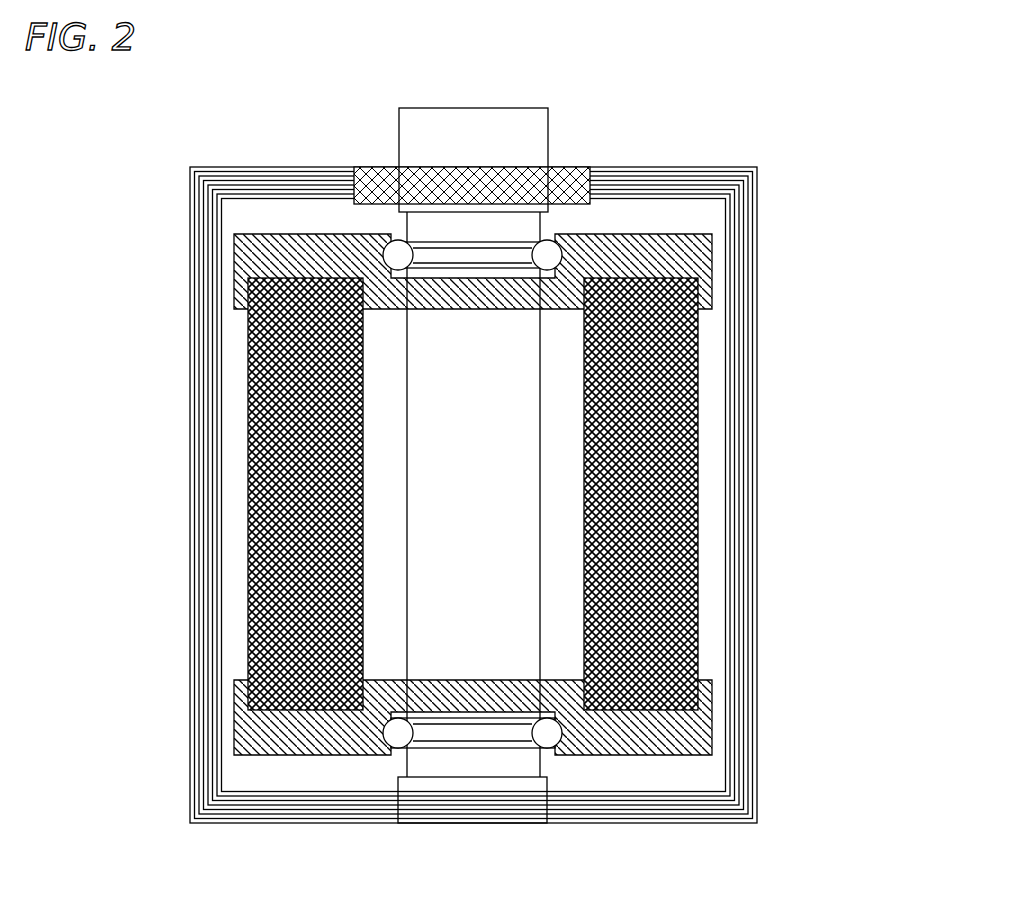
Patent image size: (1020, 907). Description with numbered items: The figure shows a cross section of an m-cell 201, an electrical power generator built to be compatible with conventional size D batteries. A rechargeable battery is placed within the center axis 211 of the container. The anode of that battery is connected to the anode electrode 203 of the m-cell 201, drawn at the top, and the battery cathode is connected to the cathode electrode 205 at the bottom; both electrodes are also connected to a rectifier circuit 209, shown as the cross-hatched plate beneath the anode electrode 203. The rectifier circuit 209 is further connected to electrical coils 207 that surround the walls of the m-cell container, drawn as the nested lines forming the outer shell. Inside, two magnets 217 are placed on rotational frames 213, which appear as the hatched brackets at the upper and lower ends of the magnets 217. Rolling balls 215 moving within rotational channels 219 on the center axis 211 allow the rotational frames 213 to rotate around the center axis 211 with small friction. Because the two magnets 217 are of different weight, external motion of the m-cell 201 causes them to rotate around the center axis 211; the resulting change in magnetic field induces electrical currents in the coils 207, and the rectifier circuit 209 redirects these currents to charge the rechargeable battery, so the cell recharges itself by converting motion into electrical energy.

The m-cell 201 is at (757, 207).
The anode electrode 203 is at (503, 132).
The cathode electrode 205 is at (432, 786).
The electrical coils 207 is at (742, 413).
The rectifier circuit 209 is at (568, 168).
The center axis 211 is at (423, 223).
The rotational frames 213 is at (685, 233).
The rolling balls 215 is at (368, 244).
The magnets 217 is at (698, 323).
The rotational channels 219 is at (477, 256).